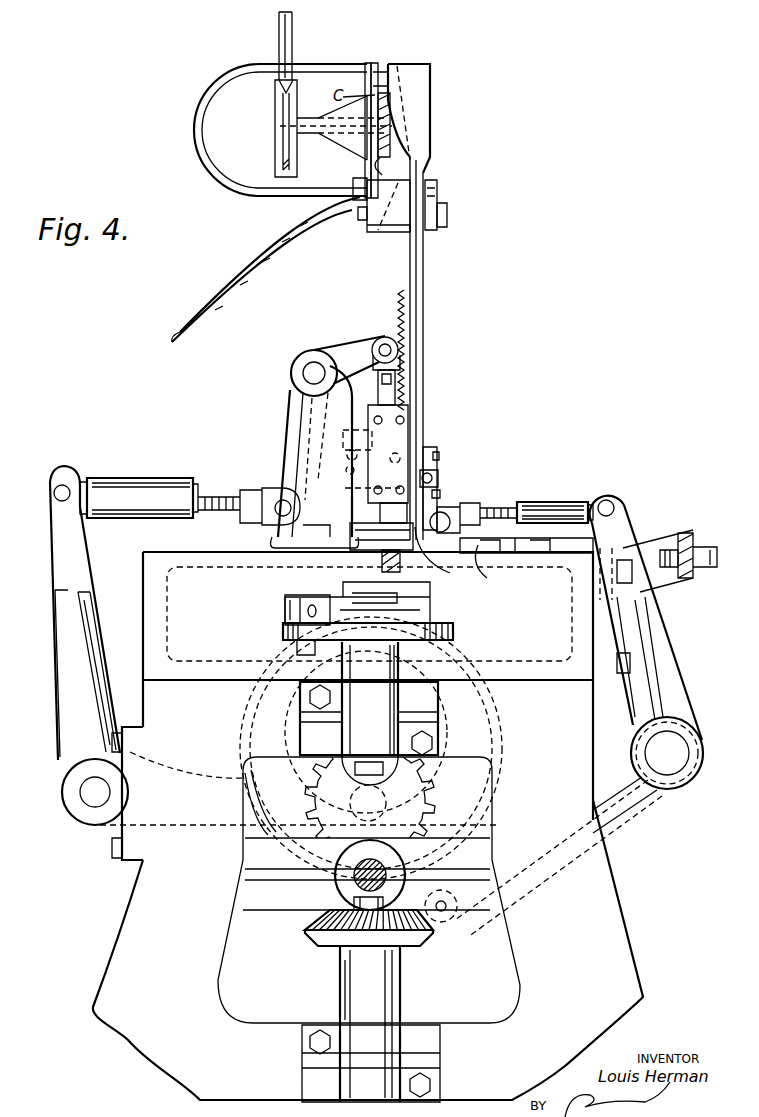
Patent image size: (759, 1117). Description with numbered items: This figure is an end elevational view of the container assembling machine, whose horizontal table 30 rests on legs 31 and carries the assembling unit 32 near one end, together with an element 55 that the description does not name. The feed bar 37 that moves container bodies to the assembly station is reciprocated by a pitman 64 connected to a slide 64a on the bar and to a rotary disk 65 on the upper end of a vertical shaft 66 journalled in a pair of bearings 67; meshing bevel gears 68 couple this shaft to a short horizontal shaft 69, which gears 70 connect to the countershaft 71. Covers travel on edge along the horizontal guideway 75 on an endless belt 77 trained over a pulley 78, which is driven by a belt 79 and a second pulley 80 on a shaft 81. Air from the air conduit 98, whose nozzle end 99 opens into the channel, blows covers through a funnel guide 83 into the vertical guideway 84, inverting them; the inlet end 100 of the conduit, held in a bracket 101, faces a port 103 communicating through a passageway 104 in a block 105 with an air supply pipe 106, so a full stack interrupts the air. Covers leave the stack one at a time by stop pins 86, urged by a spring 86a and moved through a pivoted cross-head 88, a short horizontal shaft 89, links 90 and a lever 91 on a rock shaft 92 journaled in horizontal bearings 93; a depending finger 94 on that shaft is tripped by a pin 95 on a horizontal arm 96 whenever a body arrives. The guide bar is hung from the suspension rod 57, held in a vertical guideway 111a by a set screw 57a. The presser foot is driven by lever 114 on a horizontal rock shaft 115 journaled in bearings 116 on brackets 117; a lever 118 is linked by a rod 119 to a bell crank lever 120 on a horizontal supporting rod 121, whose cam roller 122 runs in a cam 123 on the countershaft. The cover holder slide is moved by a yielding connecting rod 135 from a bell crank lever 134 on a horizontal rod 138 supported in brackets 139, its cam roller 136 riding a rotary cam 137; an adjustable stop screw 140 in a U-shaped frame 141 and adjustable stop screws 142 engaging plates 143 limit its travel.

The horizontal table 30 is at (151, 577).
The legs 31 is at (600, 937).
The assembling unit 32 is at (478, 450).
The feed bar 37 is at (402, 563).
The base plate 55 is at (355, 533).
The suspension rod 57 is at (380, 512).
The set screw 57a is at (398, 380).
The pitman 64 is at (287, 606).
The slide 64a is at (392, 592).
The rotary disk 65 is at (286, 633).
The vertical shaft 66 is at (400, 770).
The bearings 67 is at (372, 712).
The bevel gears 68 is at (418, 940).
The short horizontal shaft 69 is at (392, 870).
The gears 70 is at (407, 807).
The countershaft 71 is at (369, 718).
The horizontal guideway 75 is at (378, 68).
The endless belt 77 is at (388, 171).
The pulley 78 is at (392, 140).
The belt 79 is at (292, 25).
The second pulley 80 is at (278, 100).
The shaft 81 is at (276, 126).
The funnel guide 83 is at (418, 78).
The vertical guideway 84 is at (424, 268).
The stop pins 86 is at (347, 455).
The spring 86a is at (398, 344).
The pivoted cross-head 88 is at (350, 440).
The short horizontal shaft 89 is at (346, 470).
The links 90 is at (396, 445).
The lever 91 is at (438, 479).
The rock shaft 92 is at (434, 474).
The horizontal bearings 93 is at (434, 450).
The depending finger 94 is at (440, 494).
The pin 95 is at (444, 556).
The horizontal arm 96 is at (348, 488).
The air conduit 98 is at (196, 117).
The nozzle end 99 is at (368, 64).
The inlet end 100 is at (406, 192).
The bracket 101 is at (360, 208).
The port 103 is at (398, 226).
The passageway 104 is at (438, 188).
The block 105 is at (447, 220).
The air supply pipe 106 is at (262, 250).
The vertical guideway 111a is at (405, 418).
The lever 114 is at (352, 328).
The horizontal rock shaft 115 is at (305, 373).
The bearings 116 is at (304, 362).
The brackets 117 is at (318, 413).
The lever 118 is at (288, 452).
The rod 119 is at (168, 470).
The bell crank lever 120 is at (63, 631).
The horizontal supporting rod 121 is at (90, 792).
The cam roller 122 is at (355, 803).
The cam 123 is at (262, 708).
The bell crank lever 134 is at (672, 696).
The yielding connecting rod 135 is at (572, 502).
The cam roller 136 is at (452, 918).
The rotary cam 137 is at (266, 826).
The horizontal rod 138 is at (690, 753).
The brackets 139 is at (688, 776).
The adjustable stop screw 140 is at (664, 552).
The U-shaped frame 141 is at (692, 538).
The adjustable stop screws 142 is at (530, 547).
The plates 143 is at (496, 568).